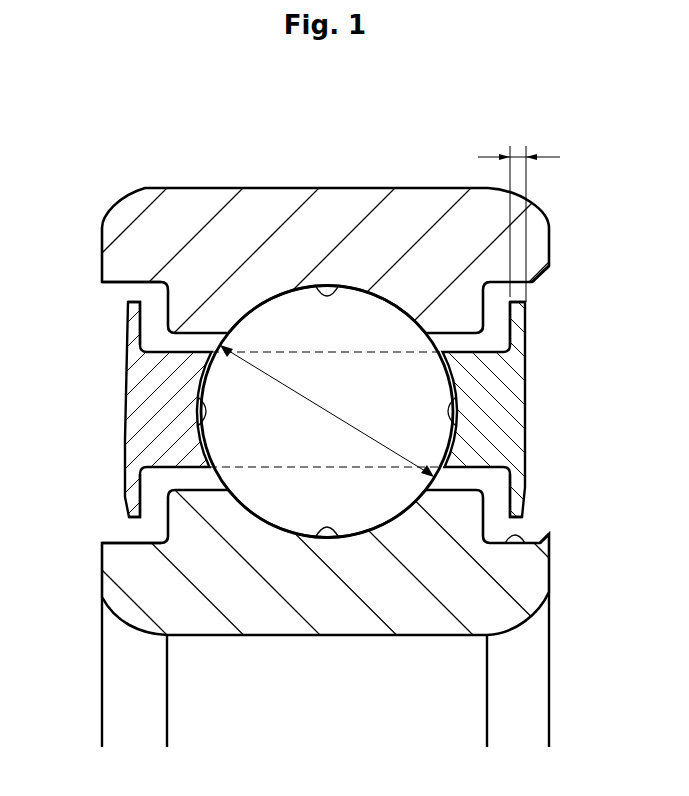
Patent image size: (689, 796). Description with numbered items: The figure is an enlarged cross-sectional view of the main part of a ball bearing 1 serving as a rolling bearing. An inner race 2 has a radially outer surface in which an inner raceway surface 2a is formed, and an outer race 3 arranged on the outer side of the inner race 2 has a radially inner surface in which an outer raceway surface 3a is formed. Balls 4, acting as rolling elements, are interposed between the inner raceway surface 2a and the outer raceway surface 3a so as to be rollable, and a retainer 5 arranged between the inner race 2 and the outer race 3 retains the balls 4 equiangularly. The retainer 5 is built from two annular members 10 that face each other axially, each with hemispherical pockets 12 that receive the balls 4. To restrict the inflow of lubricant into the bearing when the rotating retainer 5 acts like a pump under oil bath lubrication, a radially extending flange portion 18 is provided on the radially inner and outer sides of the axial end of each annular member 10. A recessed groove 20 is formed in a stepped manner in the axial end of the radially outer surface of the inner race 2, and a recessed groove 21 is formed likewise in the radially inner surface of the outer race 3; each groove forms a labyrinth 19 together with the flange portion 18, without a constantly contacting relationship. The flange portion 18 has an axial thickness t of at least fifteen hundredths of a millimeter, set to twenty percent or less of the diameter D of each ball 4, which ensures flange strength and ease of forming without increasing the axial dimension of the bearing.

The ball bearing 1 is at (116, 172).
The inner race 2 is at (230, 598).
The inner raceway surface 2a is at (336, 541).
The outer race 3 is at (188, 197).
The outer raceway surface 3a is at (348, 297).
The ball 4 is at (290, 315).
The retainer 5 is at (117, 404).
The annular member 10 is at (140, 382).
The pocket 12 is at (198, 424).
The flange portion 18 is at (135, 327).
The labyrinth 19 is at (122, 294).
The recessed groove 20 is at (544, 548).
The recessed groove 21 is at (539, 284).
The diameter of ball D is at (327, 411).
The axial thickness t is at (519, 214).